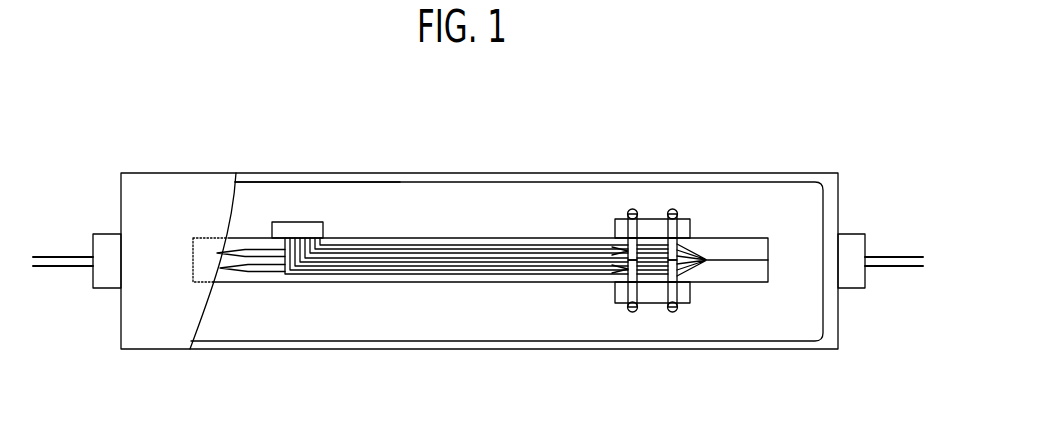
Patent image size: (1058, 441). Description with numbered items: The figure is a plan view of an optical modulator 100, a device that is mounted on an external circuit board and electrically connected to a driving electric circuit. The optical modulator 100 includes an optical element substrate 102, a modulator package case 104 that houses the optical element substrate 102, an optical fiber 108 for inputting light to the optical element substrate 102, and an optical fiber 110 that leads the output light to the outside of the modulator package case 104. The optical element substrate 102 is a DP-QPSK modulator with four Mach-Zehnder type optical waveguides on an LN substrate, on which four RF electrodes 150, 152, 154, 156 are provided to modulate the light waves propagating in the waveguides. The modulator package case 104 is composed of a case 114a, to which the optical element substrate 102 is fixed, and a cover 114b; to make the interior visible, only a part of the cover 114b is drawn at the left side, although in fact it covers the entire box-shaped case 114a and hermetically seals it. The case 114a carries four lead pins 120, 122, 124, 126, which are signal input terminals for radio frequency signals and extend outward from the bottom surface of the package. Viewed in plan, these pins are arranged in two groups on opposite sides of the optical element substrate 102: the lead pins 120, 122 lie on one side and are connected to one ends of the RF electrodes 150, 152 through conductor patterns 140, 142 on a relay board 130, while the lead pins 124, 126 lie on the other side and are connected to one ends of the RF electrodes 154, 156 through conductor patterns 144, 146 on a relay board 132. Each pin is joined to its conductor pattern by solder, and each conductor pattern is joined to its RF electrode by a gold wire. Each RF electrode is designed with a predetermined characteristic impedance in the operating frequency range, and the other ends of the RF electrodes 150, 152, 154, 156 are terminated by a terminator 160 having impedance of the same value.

The optical modulator 100 is at (155, 94).
The optical element substrate 102 is at (466, 238).
The modulator package case 104 is at (306, 68).
The optical fiber 108 is at (892, 260).
The optical fiber 110 is at (62, 259).
The case 114a is at (250, 178).
The cover 114b is at (197, 193).
The lead pin 120 is at (629, 210).
The lead pin 122 is at (675, 211).
The lead pin 124 is at (628, 312).
The lead pin 126 is at (676, 311).
The relay board 130 is at (642, 219).
The relay board 132 is at (645, 307).
The conductor pattern 140 is at (618, 224).
The conductor pattern 142 is at (692, 225).
The conductor pattern 144 is at (620, 292).
The conductor pattern 146 is at (690, 294).
The RF electrode 150 is at (622, 245).
The RF electrode 152 is at (690, 242).
The RF electrode 154 is at (620, 266).
The RF electrode 156 is at (692, 270).
The terminator 160 is at (313, 222).